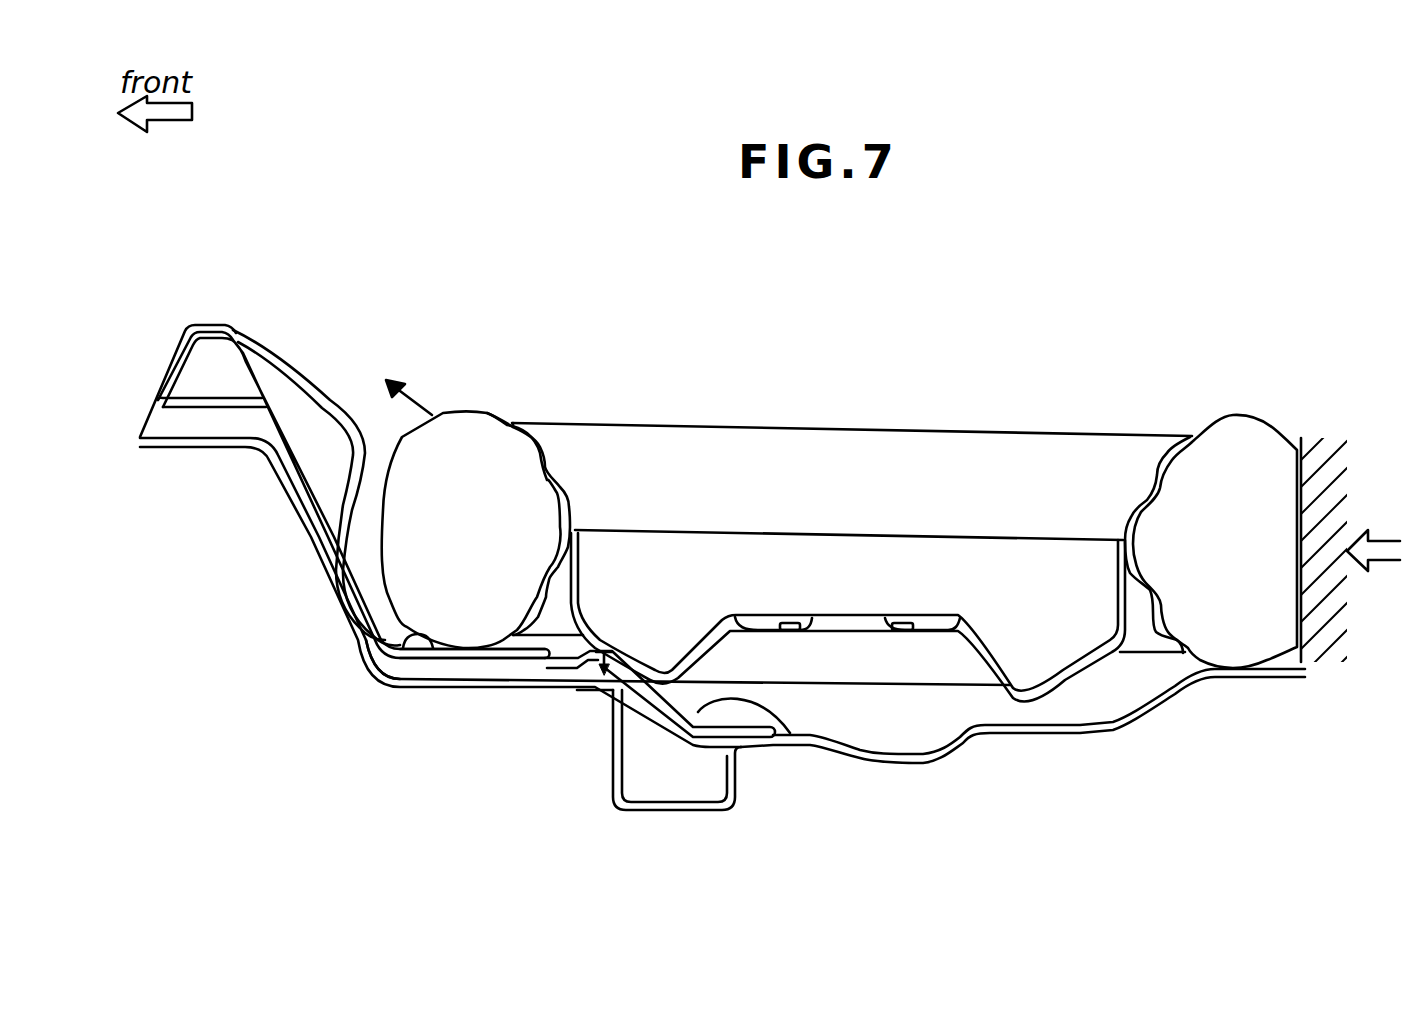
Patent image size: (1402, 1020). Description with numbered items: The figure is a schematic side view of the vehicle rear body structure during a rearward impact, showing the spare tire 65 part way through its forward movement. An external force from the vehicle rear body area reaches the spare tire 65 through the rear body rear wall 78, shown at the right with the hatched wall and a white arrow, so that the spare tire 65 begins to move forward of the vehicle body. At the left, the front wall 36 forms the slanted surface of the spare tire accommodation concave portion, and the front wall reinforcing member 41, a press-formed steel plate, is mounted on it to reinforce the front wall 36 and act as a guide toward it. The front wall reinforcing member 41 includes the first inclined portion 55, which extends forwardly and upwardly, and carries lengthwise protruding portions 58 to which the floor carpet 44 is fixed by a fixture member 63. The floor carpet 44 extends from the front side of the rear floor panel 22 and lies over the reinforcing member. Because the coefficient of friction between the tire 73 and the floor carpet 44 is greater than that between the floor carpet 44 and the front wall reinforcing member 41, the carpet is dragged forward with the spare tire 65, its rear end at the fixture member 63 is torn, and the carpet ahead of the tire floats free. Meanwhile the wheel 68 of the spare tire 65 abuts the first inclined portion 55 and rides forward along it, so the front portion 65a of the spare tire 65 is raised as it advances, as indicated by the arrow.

The rear floor panel 22 is at (1087, 733).
The front wall 36 is at (340, 590).
The front wall reinforcing member 41 is at (329, 492).
The floor carpet 44 is at (392, 668).
The first inclined portion 55 is at (791, 735).
The lengthwise protruding portion 58 is at (502, 668).
The fixture member 63 is at (592, 680).
The spare tire 65 is at (920, 432).
The front portion of the spare tire 65a is at (467, 412).
The wheel 68 is at (552, 463).
The tire 73 is at (488, 410).
The rear body rear wall 78 is at (1297, 452).